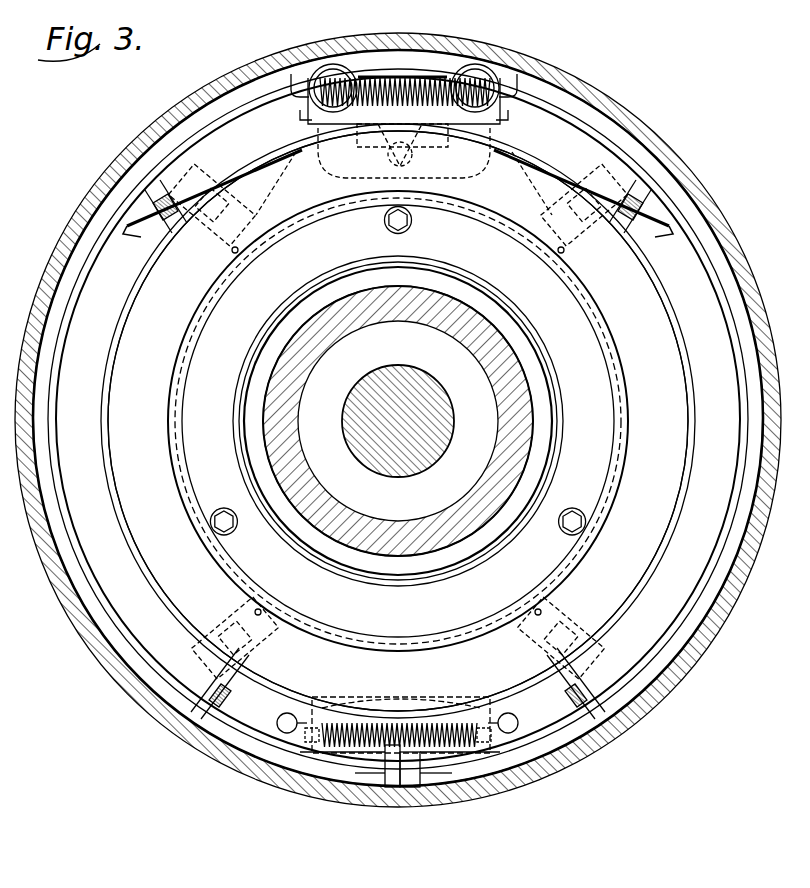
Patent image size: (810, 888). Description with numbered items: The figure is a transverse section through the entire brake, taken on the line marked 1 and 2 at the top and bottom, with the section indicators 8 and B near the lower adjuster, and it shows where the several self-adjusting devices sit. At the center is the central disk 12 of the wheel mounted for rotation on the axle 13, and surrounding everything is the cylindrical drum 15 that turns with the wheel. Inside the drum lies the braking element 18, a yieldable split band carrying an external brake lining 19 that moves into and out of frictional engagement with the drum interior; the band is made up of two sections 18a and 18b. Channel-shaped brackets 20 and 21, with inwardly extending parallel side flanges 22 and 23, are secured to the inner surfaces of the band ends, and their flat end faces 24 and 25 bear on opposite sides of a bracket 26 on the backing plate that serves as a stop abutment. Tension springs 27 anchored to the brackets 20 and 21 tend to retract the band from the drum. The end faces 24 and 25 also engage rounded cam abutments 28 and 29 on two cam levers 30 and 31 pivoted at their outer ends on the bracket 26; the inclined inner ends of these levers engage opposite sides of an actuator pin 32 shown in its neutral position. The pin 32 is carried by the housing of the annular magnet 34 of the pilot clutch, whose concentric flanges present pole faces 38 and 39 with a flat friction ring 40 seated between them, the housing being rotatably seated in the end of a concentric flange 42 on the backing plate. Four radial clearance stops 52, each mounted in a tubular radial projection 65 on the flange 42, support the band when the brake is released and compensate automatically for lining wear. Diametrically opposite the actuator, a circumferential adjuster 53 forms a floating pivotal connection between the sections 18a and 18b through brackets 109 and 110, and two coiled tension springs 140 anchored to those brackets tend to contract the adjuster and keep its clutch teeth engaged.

The section line 1- 1 is at (372, 15).
The section line 2- 2 is at (680, 114).
The section line 8- 8 is at (265, 723).
The section indicator B is at (264, 760).
The central disk 12 is at (280, 381).
The axle 13 is at (354, 415).
The cylindrical drum 15 is at (107, 178).
The braking element 18 is at (708, 268).
The band section 18a is at (415, 766).
The band section 18b is at (382, 770).
The brake lining 19 is at (715, 232).
The channel-shaped bracket 20 is at (290, 76).
The channel-shaped bracket 21 is at (538, 96).
The side flange 22 is at (205, 152).
The side flange 23 is at (584, 148).
The end face 24 is at (325, 66).
The end face 25 is at (500, 70).
The bracket 26 is at (440, 77).
The tension springs 27 is at (370, 78).
The cam abutment 28 is at (305, 124).
The cam abutment 29 is at (502, 116).
The cam lever 30 is at (332, 126).
The cam lever 31 is at (468, 126).
The actuator pin 32 is at (402, 145).
The annular magnet 34 is at (128, 333).
The pole face 38 is at (172, 421).
The pole face 39 is at (110, 377).
The friction ring 40 is at (128, 486).
The concentric flange 42 is at (622, 385).
The radial clearance stop 52 is at (170, 205).
The circumferential adjuster 53 is at (402, 700).
The tubular radial projection 65 is at (206, 270).
The bracket 109 is at (505, 712).
The bracket 110 is at (283, 712).
The coiled tension springs 140 is at (470, 742).